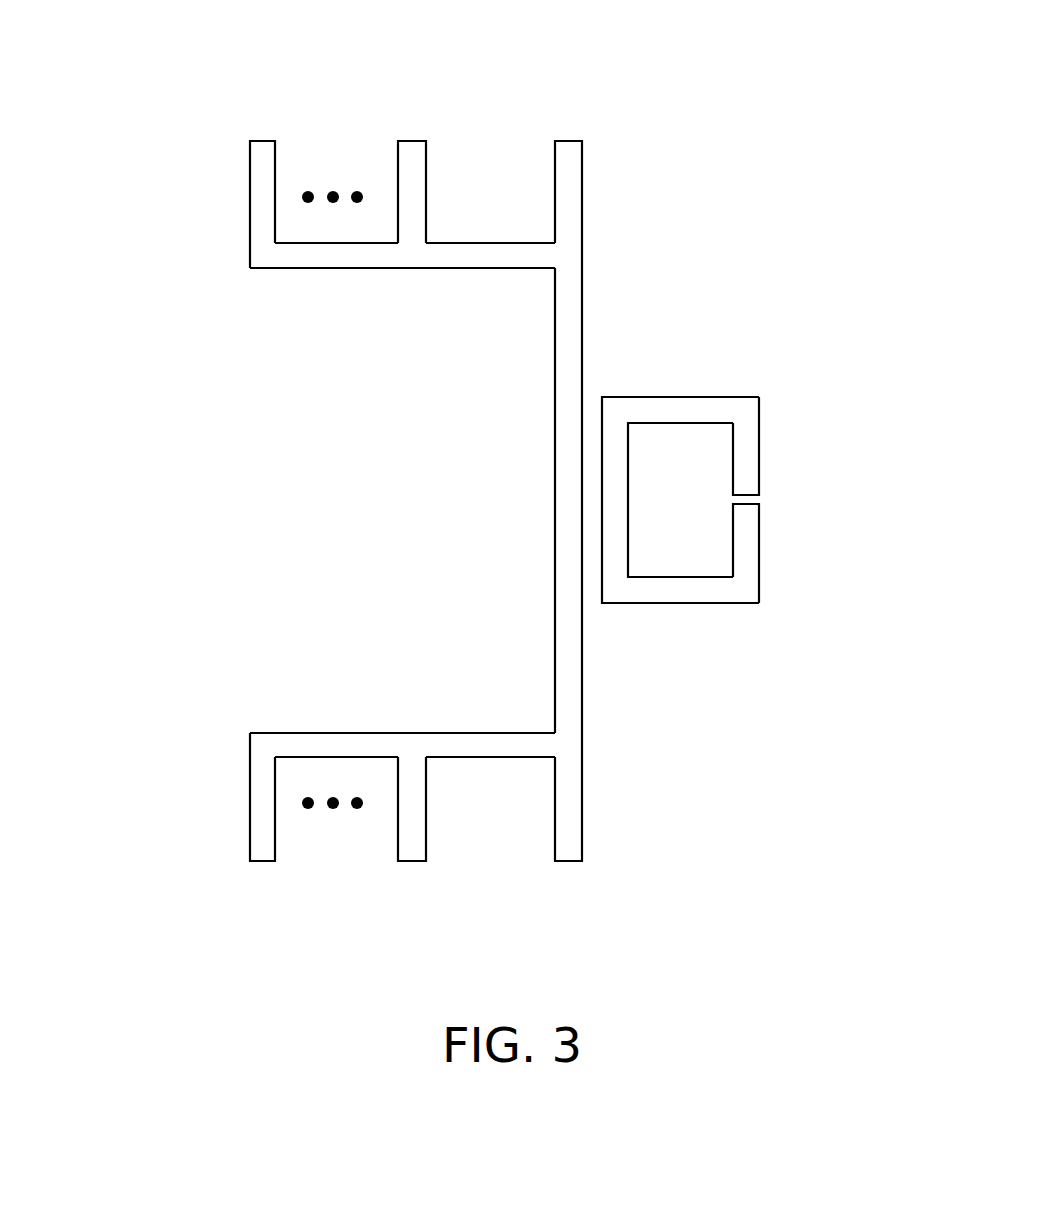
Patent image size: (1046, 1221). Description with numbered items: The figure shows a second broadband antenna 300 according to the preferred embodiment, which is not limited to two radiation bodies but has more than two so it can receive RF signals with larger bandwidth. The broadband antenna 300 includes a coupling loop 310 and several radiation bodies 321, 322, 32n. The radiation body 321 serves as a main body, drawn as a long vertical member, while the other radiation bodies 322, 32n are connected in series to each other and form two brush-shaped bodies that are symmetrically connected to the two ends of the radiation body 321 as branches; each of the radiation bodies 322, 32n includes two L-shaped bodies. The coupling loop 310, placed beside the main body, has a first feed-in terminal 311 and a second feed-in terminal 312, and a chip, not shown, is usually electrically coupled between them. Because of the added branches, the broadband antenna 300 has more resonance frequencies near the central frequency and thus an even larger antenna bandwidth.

The broadband antenna 300 is at (868, 52).
The coupling loop 310 is at (670, 397).
The first feed-in terminal 311 is at (745, 493).
The second feed-in terminal 312 is at (748, 504).
The radiation body 321 is at (582, 186).
The radiation body 322 is at (426, 187).
The radiation body 32n is at (250, 185).